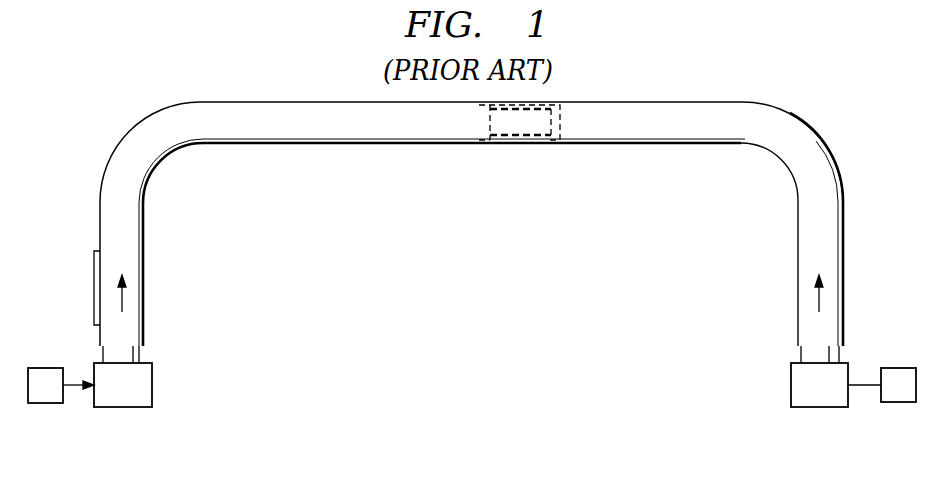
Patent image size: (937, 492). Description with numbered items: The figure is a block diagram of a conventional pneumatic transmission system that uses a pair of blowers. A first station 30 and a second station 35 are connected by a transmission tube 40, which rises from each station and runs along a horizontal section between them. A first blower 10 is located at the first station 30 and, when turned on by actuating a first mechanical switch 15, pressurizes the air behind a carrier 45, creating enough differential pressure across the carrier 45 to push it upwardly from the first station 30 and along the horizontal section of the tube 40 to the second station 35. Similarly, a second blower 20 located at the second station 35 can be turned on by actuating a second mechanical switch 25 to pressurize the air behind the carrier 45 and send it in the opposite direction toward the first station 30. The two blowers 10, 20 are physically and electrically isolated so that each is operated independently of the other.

The first blower 10 is at (118, 408).
The first mechanical switch 15 is at (45, 404).
The second blower 20 is at (826, 408).
The second mechanical switch 25 is at (895, 403).
The first station 30 is at (130, 322).
The second station 35 is at (807, 326).
The transmission tube 40 is at (313, 147).
The carrier 45 is at (528, 145).